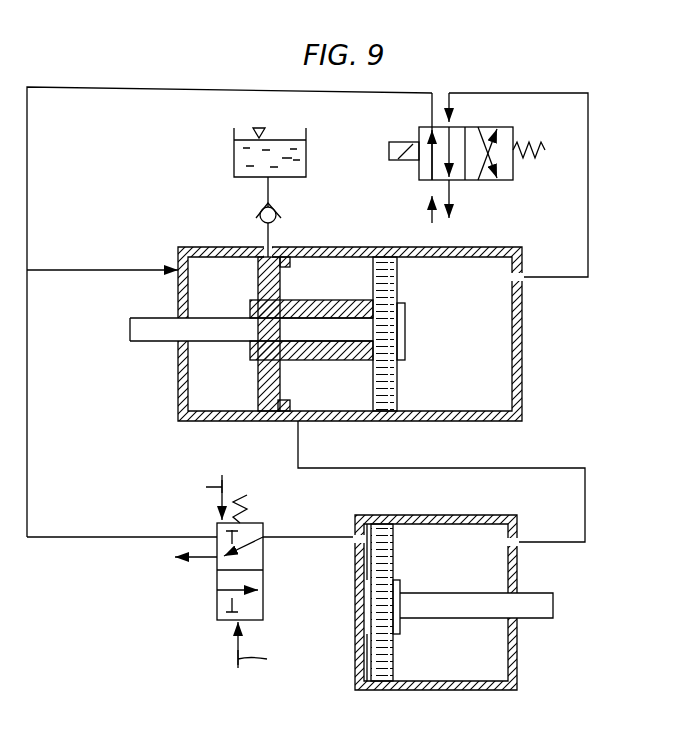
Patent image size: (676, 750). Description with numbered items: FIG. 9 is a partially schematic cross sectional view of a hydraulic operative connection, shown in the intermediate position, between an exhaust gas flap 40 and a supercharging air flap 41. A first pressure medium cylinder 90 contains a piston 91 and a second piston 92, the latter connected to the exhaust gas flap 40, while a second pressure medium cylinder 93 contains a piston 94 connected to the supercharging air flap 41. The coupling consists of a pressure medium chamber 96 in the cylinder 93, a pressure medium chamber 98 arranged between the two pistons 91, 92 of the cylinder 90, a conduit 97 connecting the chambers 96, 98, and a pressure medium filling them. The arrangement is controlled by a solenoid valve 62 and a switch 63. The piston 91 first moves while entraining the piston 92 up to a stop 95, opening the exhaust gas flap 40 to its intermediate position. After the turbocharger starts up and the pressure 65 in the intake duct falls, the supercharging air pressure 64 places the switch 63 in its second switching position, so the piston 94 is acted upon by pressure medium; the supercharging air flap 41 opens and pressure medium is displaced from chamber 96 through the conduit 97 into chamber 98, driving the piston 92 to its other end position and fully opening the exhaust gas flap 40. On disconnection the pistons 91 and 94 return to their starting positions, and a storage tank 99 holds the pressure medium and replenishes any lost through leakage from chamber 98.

The exhaust gas flap 40 is at (213, 329).
The supercharging air flap 41 is at (506, 606).
The solenoid valve 62 is at (500, 184).
The switch 63 is at (202, 618).
The supercharging air pressure 64 is at (268, 647).
The pressure in the intake duct 65 is at (211, 499).
The first pressure medium cylinder 90 is at (361, 247).
The piston 91 is at (280, 288).
The second piston 92 is at (391, 289).
The second pressure medium cylinder 93 is at (456, 517).
The piston 94 is at (385, 570).
The stop 95 is at (289, 402).
The pressure medium chamber 96 is at (483, 573).
The conduit 97 is at (588, 500).
The pressure medium chamber 98 is at (362, 397).
The storage tank 99 is at (237, 157).